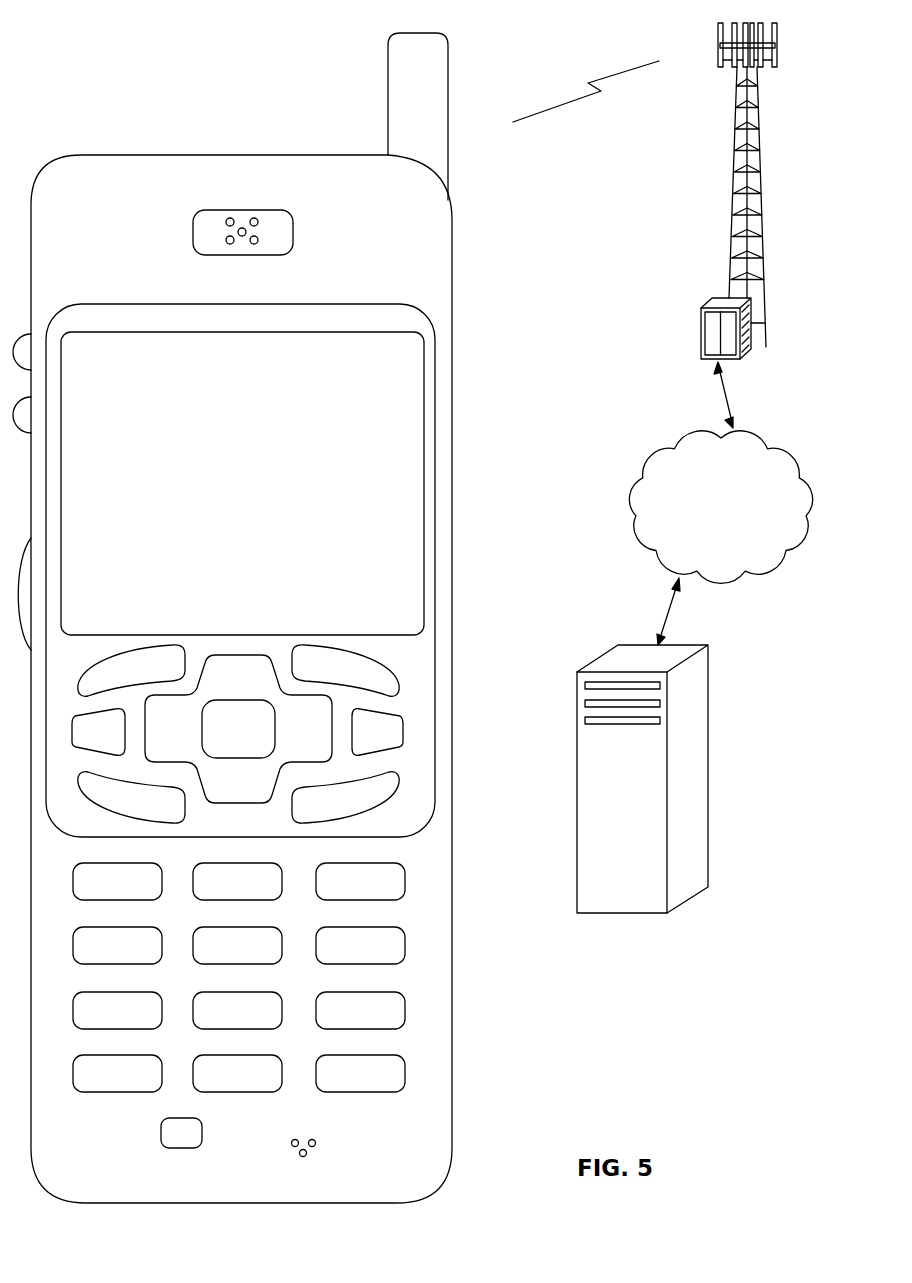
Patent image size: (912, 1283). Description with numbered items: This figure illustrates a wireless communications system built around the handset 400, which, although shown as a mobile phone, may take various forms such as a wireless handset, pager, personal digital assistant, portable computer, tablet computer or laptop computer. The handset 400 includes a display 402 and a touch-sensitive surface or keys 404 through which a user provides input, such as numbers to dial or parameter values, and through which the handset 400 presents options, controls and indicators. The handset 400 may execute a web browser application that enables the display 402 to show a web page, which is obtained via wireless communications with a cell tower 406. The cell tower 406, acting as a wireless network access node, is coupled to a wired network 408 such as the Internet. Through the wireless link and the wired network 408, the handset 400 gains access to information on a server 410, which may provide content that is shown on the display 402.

The handset 400 is at (85, 1203).
The display 402 is at (424, 347).
The keys 404 is at (458, 1100).
The cell tower 406 is at (733, 204).
The wired network 408 is at (641, 556).
The server 410 is at (621, 913).